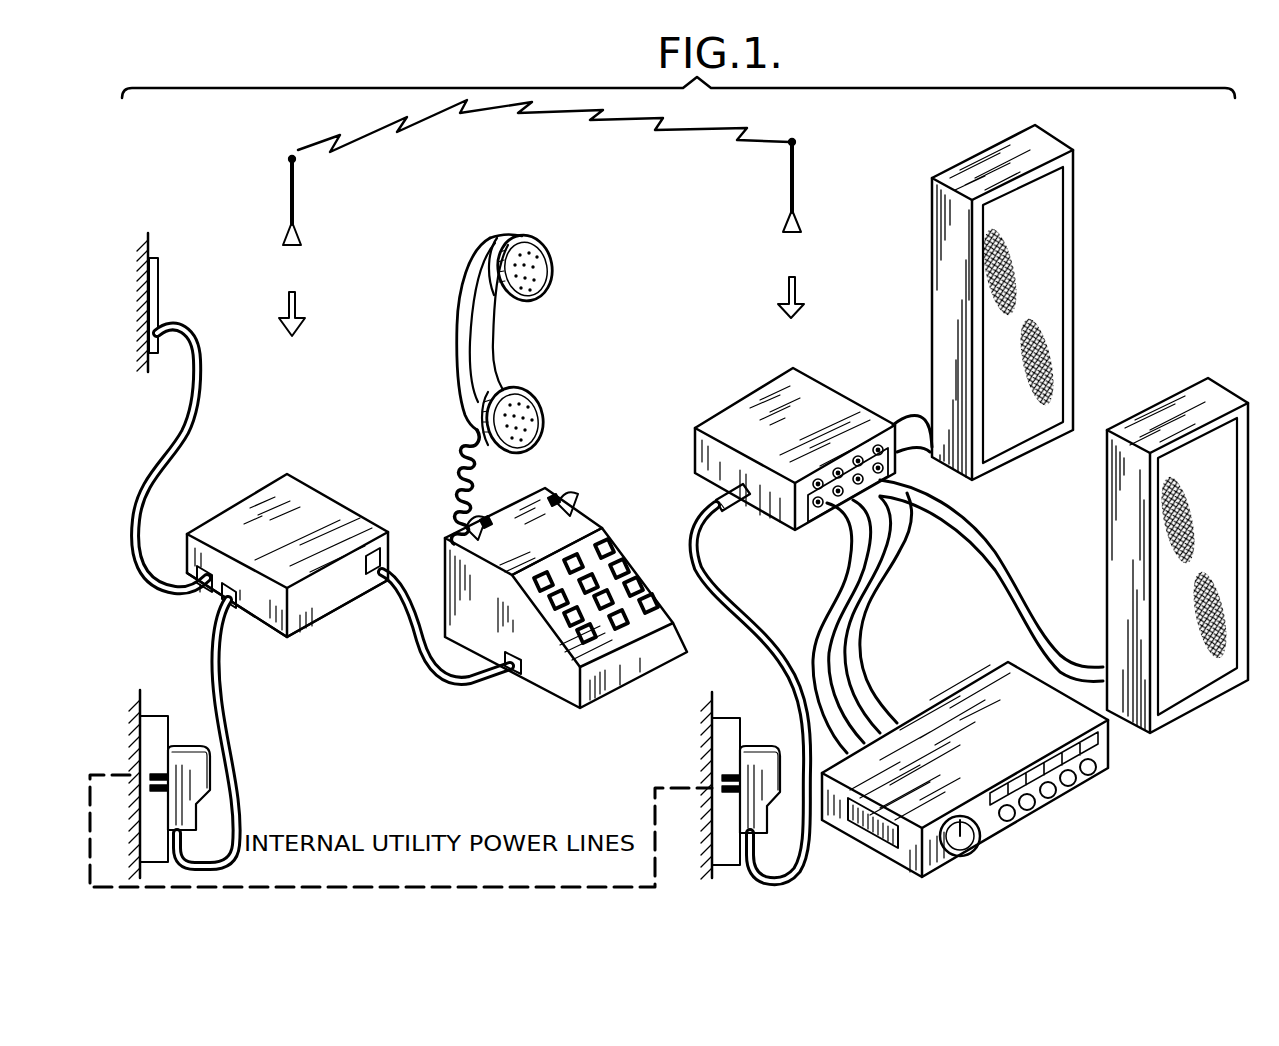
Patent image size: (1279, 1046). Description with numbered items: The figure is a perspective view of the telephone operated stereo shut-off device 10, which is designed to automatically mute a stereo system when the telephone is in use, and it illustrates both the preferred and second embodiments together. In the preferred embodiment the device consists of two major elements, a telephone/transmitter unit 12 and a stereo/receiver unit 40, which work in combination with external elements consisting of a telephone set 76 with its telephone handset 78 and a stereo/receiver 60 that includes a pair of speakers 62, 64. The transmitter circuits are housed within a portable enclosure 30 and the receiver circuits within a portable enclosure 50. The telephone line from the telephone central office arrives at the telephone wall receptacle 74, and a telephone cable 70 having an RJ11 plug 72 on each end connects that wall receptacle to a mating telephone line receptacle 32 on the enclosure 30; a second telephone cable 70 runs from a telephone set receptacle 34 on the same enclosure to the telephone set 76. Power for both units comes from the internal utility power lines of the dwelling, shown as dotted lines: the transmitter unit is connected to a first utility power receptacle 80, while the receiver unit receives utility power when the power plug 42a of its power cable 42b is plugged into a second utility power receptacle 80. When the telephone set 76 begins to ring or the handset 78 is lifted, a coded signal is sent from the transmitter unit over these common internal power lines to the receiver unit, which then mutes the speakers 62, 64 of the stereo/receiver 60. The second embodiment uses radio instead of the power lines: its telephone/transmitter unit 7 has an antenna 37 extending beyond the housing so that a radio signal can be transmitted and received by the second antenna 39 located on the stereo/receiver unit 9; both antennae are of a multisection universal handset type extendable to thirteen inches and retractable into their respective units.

The telephone operated stereo shut-off device 10 is at (1107, 152).
The telephone/transmitter unit 12 is at (297, 537).
The telephone/transmitter unit 7 is at (297, 537).
The portable enclosure 30 is at (273, 627).
The telephone line receptacle 32 is at (206, 594).
The telephone set receptacle 34 is at (390, 543).
The antenna 37 is at (296, 206).
The second antenna 39 is at (796, 185).
The stereo/receiver unit 40 is at (765, 428).
The stereo/receiver unit 9 is at (765, 428).
The power plug 42a is at (765, 803).
The power cable 42b is at (787, 653).
The portable enclosure 50 is at (752, 402).
The stereo/receiver 60 is at (898, 855).
The speaker 62 is at (931, 270).
The speaker 64 is at (1105, 585).
The telephone cable 70 is at (184, 328).
The RJ11 plug 72 is at (373, 588).
The telephone wall receptacle 74 is at (152, 256).
The telephone set 76 is at (553, 693).
The telephone handset 78 is at (456, 330).
The utility power receptacle 80 is at (152, 722).